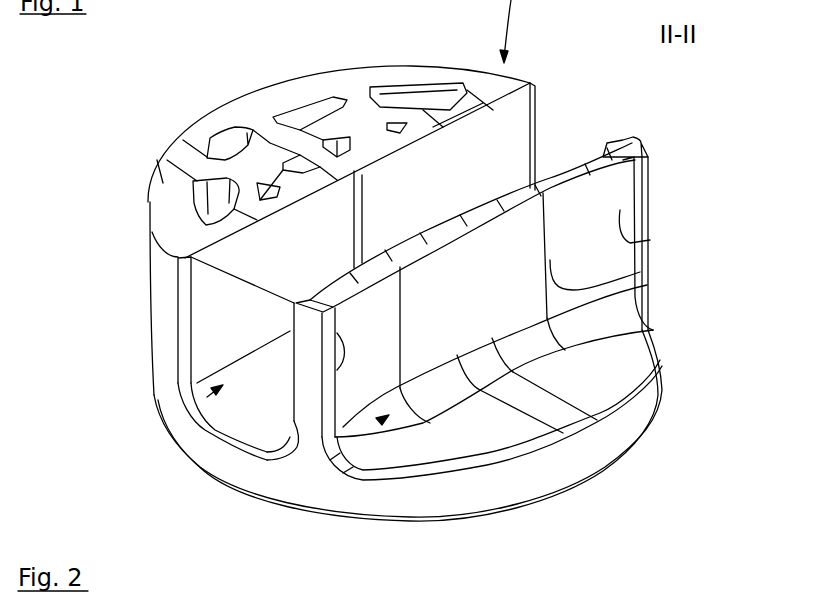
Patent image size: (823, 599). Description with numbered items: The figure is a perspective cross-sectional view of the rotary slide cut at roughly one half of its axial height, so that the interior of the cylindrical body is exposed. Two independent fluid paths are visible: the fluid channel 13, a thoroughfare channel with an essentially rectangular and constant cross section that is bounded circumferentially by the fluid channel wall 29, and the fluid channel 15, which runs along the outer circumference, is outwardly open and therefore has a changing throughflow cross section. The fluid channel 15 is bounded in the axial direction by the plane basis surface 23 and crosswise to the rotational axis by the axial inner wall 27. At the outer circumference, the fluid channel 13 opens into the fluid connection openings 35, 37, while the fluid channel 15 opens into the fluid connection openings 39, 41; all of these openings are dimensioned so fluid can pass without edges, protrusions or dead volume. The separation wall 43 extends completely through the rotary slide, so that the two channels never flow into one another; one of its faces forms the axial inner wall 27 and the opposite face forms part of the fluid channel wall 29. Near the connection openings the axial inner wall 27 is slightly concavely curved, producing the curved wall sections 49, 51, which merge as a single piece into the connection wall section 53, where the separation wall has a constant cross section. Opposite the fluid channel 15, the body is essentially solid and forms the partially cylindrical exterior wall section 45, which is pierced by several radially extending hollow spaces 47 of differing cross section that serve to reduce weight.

The fluid channel 13 is at (207, 397).
The fluid channel 15 is at (385, 418).
The plane basis surface 23 is at (603, 373).
The axial inner wall 27 is at (640, 272).
The fluid channel wall 29 is at (257, 307).
The fluid connection opening 35 is at (183, 288).
The fluid connection opening 37 is at (538, 114).
The fluid connection opening 39 is at (322, 419).
The fluid connection opening 41 is at (649, 197).
The separation wall 43 is at (603, 157).
The exterior wall section 45 is at (157, 160).
The hollow spaces 47 is at (393, 88).
The curved wall section 49 is at (320, 372).
The curved wall section 51 is at (630, 243).
The connection wall section 53 is at (481, 290).